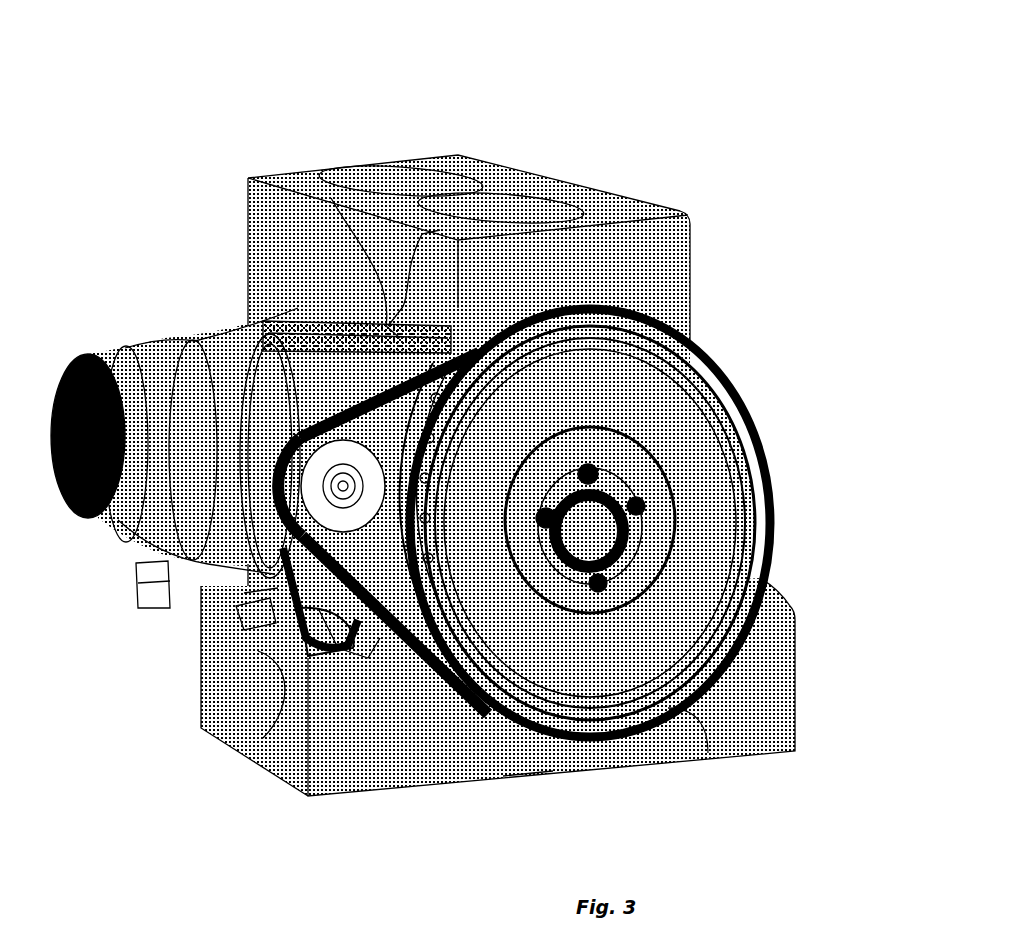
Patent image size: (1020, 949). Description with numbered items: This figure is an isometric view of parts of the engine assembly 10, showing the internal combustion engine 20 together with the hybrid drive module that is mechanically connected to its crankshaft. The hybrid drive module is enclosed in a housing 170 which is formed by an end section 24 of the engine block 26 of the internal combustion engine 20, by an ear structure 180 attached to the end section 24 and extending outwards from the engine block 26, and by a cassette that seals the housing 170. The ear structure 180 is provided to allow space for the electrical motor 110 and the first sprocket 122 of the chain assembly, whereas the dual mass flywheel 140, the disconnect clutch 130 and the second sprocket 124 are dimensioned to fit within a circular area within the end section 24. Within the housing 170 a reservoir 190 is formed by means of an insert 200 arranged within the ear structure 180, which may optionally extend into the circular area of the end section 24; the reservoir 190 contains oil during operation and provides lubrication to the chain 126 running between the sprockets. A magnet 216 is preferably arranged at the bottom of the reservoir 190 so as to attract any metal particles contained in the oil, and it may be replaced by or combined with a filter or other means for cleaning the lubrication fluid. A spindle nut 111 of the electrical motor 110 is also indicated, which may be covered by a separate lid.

The engine assembly 10 is at (518, 426).
The internal combustion engine 20 is at (567, 121).
The end section 24 is at (731, 297).
The engine block 26 is at (665, 263).
The electrical motor 110 is at (117, 548).
The spindle nut 111 is at (240, 610).
The first sprocket 122 is at (240, 595).
The second sprocket 124 is at (693, 747).
The chain 126 is at (520, 758).
The disconnect clutch 130 is at (659, 555).
The dual mass flywheel 140 is at (642, 625).
The housing 170 is at (786, 410).
The ear structure 180 is at (386, 325).
The reservoir 190 is at (280, 650).
The insert 200 is at (193, 333).
The magnet 216 is at (322, 648).